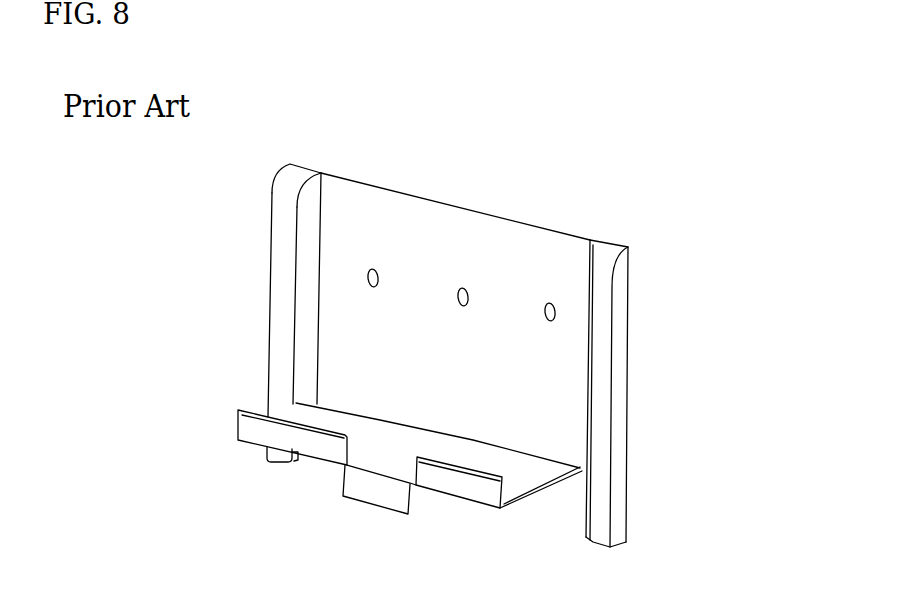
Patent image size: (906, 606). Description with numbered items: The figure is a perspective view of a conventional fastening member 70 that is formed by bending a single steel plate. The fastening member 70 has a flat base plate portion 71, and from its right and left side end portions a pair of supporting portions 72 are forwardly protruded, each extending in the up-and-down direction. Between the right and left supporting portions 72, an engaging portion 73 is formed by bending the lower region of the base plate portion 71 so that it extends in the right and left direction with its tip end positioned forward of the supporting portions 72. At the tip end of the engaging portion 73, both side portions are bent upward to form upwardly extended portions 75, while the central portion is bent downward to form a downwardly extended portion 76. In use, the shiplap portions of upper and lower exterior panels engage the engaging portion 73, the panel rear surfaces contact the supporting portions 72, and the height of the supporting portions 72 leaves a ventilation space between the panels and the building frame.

The fastening member 70 is at (719, 215).
The base plate portion 71 is at (448, 228).
The supporting portion 72 is at (282, 278).
The engaging portion 73 is at (284, 509).
The upwardly extended portion 75 is at (318, 440).
The downwardly extended portion 76 is at (382, 497).